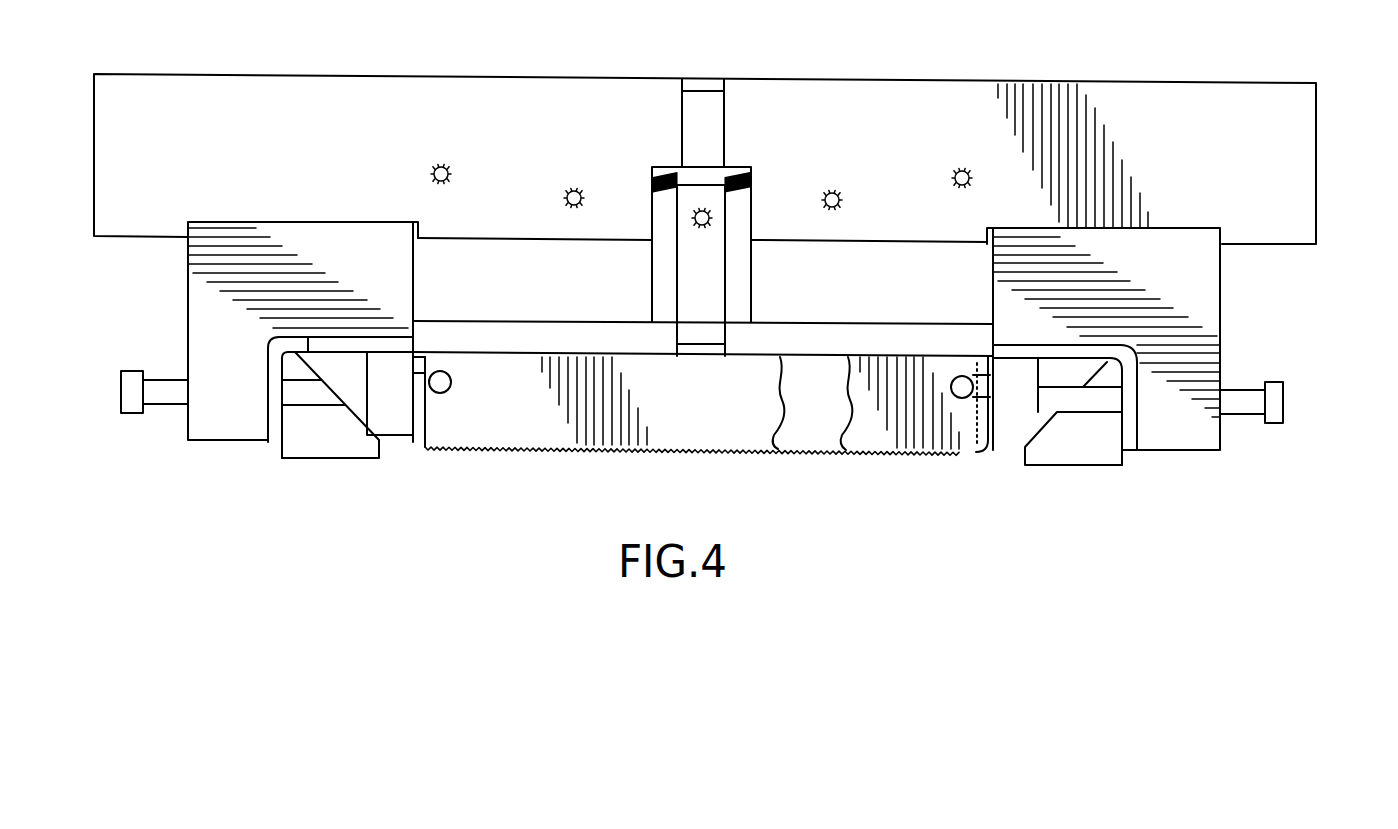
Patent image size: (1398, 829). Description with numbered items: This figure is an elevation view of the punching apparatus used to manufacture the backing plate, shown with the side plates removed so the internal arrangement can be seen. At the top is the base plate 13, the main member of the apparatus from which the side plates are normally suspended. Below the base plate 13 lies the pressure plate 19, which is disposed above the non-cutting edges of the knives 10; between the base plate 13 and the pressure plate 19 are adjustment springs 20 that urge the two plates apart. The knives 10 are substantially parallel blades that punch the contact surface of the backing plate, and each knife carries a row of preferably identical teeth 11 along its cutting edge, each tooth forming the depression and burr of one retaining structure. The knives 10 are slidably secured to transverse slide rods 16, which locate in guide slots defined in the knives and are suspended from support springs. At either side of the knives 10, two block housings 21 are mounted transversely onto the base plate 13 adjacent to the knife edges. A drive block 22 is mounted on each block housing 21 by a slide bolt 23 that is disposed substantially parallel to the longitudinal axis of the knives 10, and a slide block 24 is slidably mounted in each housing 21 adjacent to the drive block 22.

The knives 10 is at (897, 448).
The teeth 11 is at (818, 453).
The base plate 13 is at (1317, 148).
The transverse slide rods 16 is at (440, 393).
The pressure plate 19 is at (450, 338).
The adjustment springs 20 is at (748, 215).
The block housings 21 is at (1220, 333).
The drive block 22 is at (1013, 448).
The slide bolt 23 is at (1285, 400).
The slide block 24 is at (1060, 468).